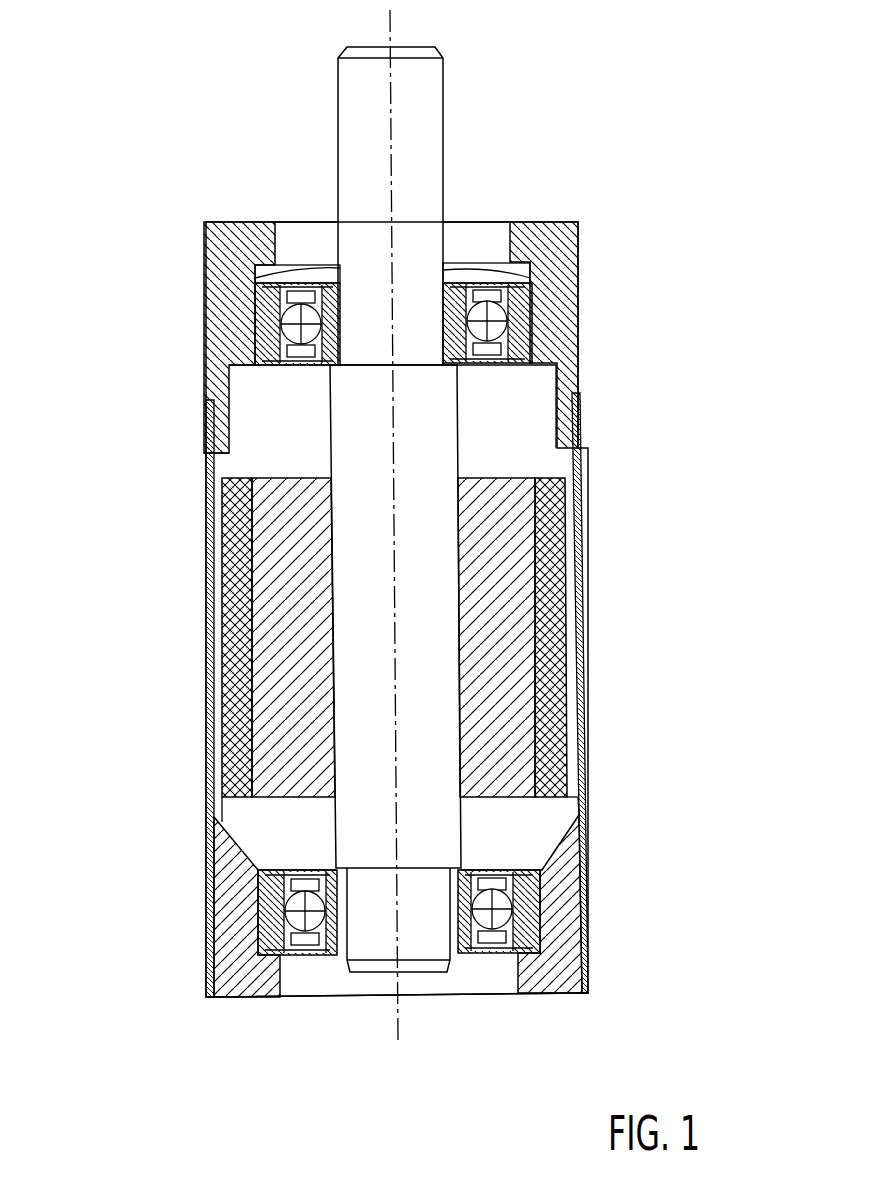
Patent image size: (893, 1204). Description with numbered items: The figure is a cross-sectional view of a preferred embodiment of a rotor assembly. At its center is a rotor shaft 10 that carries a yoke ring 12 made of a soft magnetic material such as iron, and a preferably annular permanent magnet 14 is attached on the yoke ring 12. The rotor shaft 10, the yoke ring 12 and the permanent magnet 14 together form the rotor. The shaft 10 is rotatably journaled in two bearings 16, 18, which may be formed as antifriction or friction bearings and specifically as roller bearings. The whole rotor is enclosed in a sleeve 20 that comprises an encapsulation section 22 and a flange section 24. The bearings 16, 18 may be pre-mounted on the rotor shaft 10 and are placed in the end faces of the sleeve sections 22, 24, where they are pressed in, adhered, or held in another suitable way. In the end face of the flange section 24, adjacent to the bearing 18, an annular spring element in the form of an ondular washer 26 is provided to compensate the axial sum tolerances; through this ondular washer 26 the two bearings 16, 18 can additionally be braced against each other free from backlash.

The rotor shaft 10 is at (423, 520).
The yoke ring 12 is at (502, 710).
The permanent magnet 14 is at (552, 620).
The bearing 16 is at (493, 330).
The bearing 18 is at (502, 915).
The sleeve 20 is at (182, 901).
The encapsulation section 22 is at (565, 857).
The flange section 24 is at (578, 227).
The ondular washer 26 is at (528, 275).